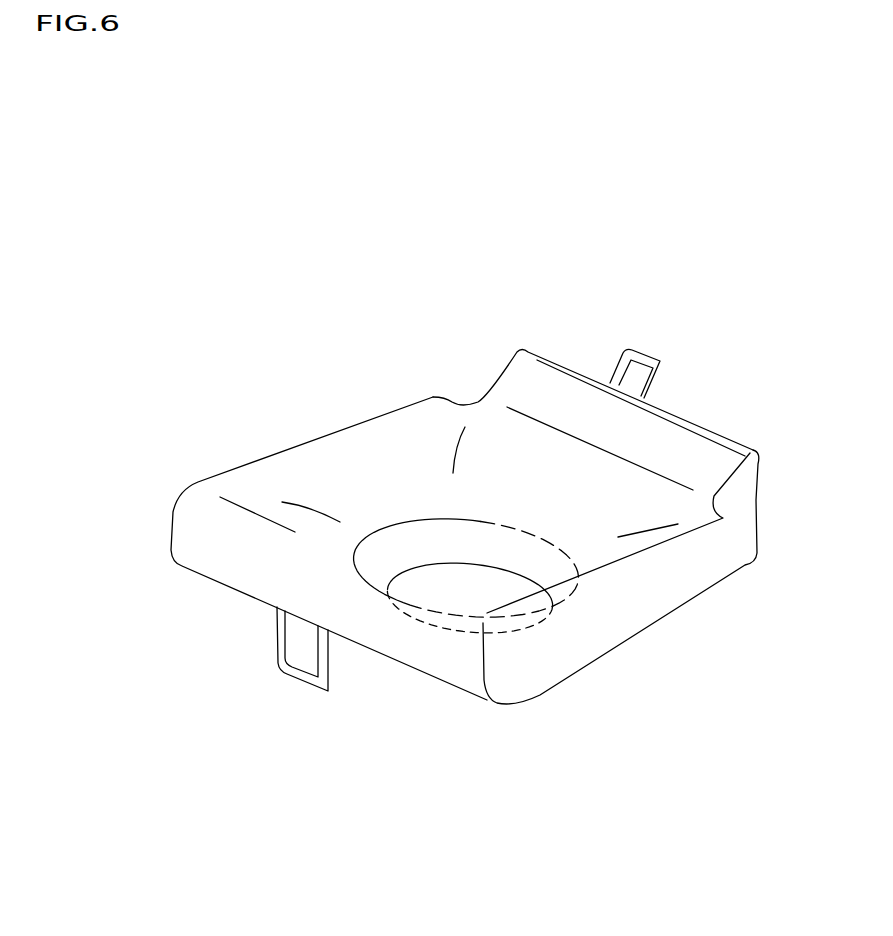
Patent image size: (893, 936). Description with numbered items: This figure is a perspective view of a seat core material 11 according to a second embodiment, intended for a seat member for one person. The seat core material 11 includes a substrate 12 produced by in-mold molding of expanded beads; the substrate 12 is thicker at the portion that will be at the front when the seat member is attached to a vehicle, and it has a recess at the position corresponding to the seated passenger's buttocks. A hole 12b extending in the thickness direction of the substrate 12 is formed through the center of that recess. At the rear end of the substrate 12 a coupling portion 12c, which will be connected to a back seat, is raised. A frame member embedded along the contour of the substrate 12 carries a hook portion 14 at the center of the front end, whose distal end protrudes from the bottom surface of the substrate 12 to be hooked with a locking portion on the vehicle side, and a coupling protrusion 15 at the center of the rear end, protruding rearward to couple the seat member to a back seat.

The seat core material 11 is at (615, 270).
The substrate 12 is at (458, 383).
The hole 12b is at (430, 565).
The coupling portion 12c is at (410, 535).
The hook portion 14 is at (288, 668).
The coupling protrusion 15 is at (650, 360).